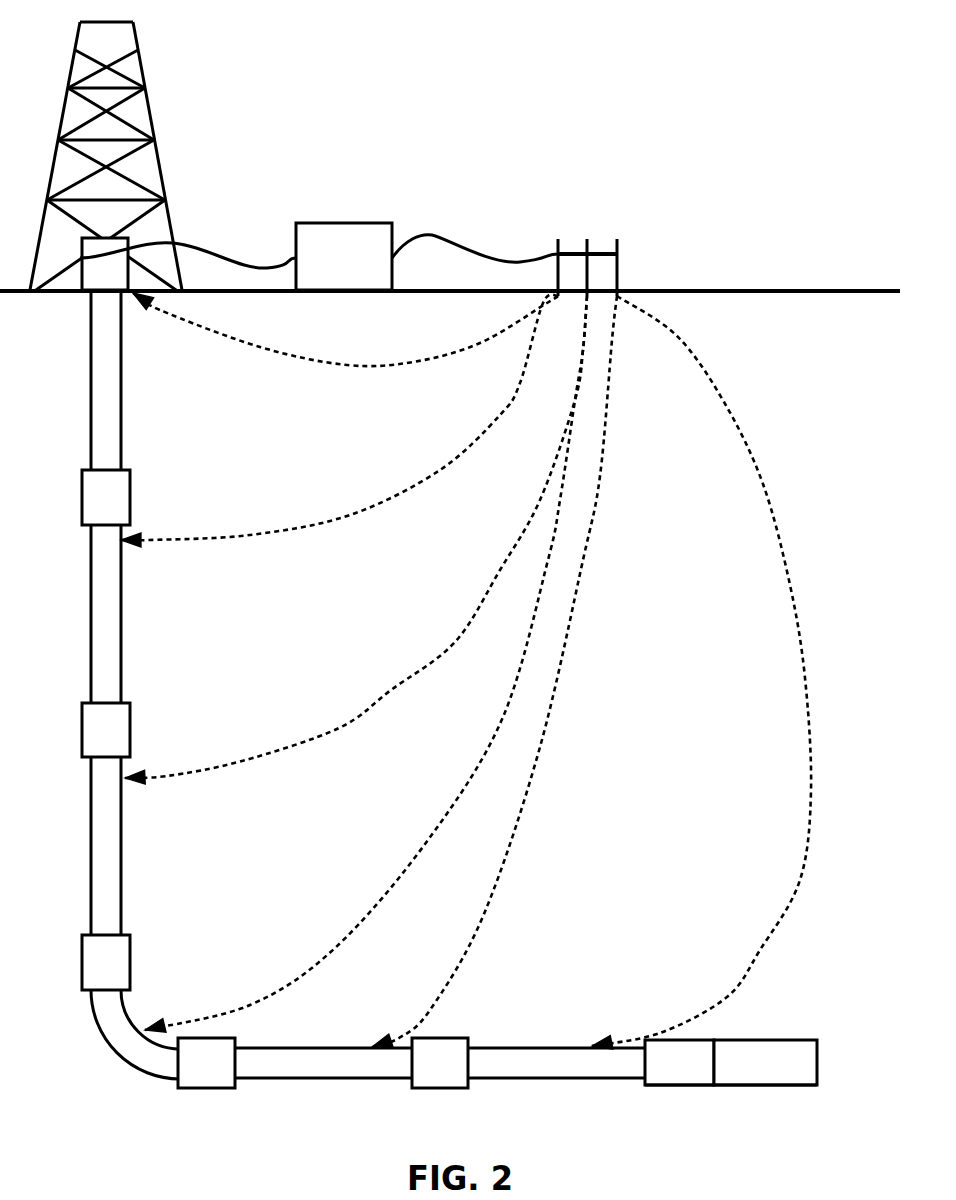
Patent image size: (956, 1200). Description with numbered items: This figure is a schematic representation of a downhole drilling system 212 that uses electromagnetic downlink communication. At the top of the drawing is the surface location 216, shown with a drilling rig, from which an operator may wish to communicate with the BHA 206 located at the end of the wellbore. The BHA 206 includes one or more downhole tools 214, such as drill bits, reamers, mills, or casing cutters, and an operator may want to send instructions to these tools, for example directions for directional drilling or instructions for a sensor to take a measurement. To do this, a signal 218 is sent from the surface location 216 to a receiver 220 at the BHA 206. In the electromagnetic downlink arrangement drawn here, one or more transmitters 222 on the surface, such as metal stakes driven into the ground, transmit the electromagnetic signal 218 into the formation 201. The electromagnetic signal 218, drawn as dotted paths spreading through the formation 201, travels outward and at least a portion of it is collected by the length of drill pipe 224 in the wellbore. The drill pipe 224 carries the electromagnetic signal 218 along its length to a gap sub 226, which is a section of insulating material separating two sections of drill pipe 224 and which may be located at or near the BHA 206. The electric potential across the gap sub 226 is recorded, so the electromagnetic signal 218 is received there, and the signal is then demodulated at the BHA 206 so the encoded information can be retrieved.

The formation 201 is at (331, 444).
The BHA 206 is at (719, 1060).
The downhole drilling system 212 is at (778, 157).
The downhole tools 214 is at (775, 1070).
The surface location 216 is at (237, 193).
The electromagnetic signal 218 is at (585, 588).
The receiver 220 is at (668, 1097).
The transmitters 222 is at (617, 265).
The drill pipe 224 is at (107, 650).
The gap sub 226 is at (658, 1075).